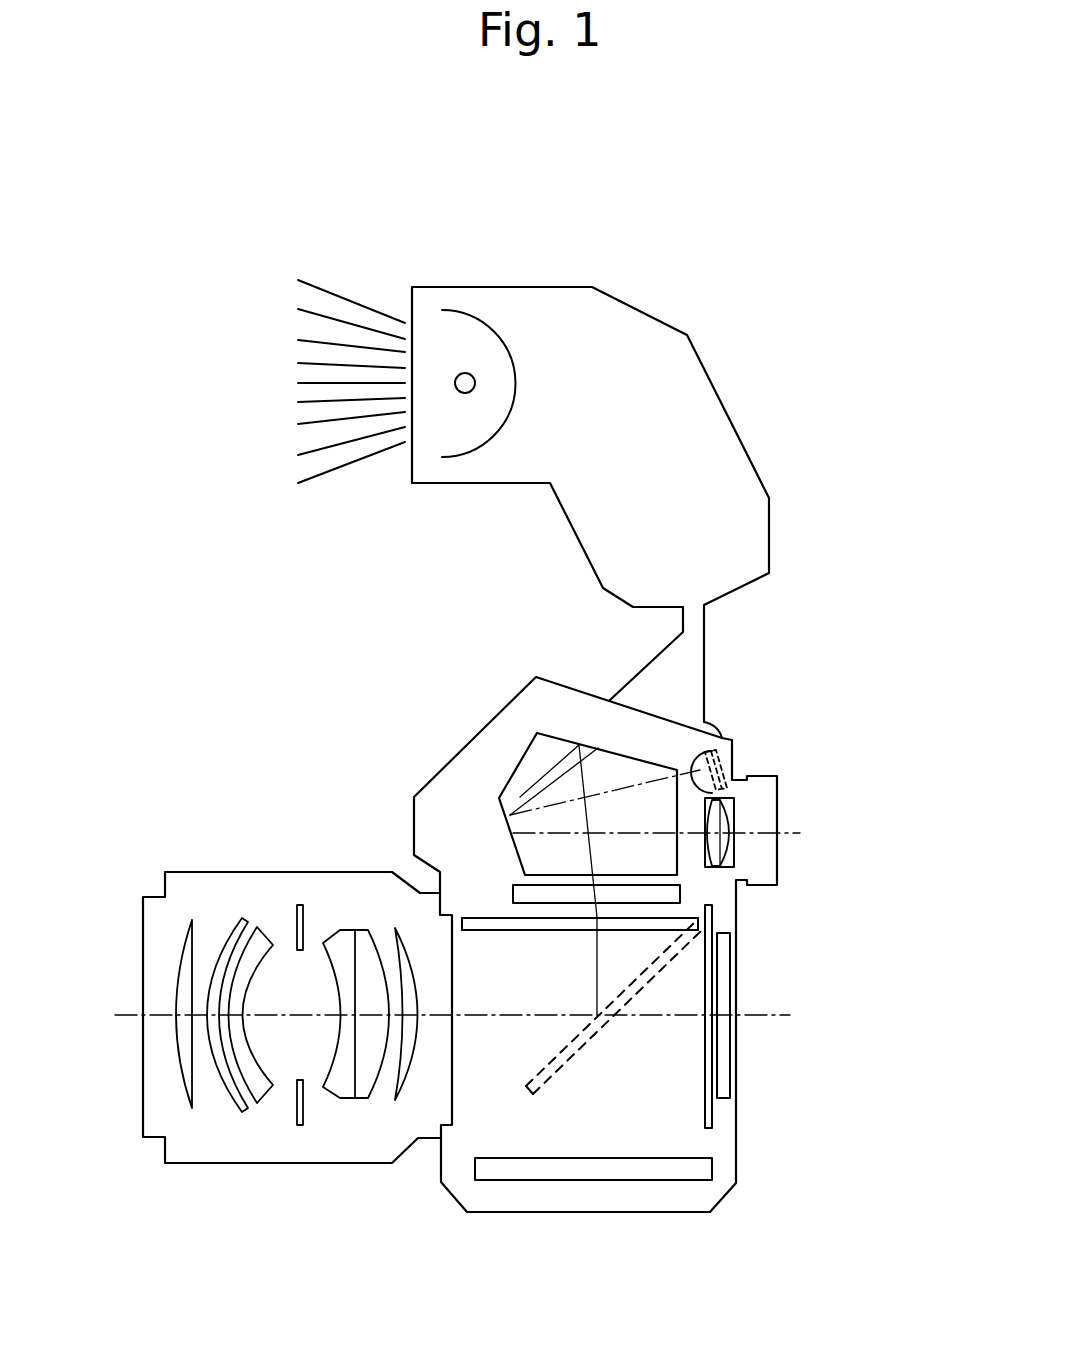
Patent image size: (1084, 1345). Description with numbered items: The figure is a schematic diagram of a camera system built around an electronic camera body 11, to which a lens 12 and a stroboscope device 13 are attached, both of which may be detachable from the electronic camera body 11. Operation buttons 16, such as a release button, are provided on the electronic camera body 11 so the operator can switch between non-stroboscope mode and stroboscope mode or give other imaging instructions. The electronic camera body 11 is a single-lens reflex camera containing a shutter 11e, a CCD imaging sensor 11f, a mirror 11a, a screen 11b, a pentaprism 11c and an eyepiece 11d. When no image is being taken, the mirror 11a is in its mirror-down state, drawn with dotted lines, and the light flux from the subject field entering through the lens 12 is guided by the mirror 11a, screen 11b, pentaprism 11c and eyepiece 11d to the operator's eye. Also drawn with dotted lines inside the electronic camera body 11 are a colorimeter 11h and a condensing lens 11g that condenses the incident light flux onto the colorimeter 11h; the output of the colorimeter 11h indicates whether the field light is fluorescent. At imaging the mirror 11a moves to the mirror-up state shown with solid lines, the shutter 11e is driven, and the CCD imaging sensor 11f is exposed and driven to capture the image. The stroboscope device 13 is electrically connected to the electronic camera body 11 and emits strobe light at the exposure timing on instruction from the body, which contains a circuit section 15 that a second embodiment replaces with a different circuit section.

The electronic camera body 11 is at (410, 752).
The mirror 11a is at (487, 918).
The screen 11b is at (680, 894).
The pentaprism 11c is at (530, 742).
The eyepiece 11d is at (720, 823).
The shutter 11e is at (712, 922).
The CCD imaging sensor 11f is at (730, 1000).
The condensing lens 11g is at (727, 738).
The colorimeter 11h is at (722, 762).
The lens 12 is at (253, 860).
The stroboscope device 13 is at (622, 281).
The circuit section 15 is at (700, 1168).
The operation buttons 16 is at (718, 724).